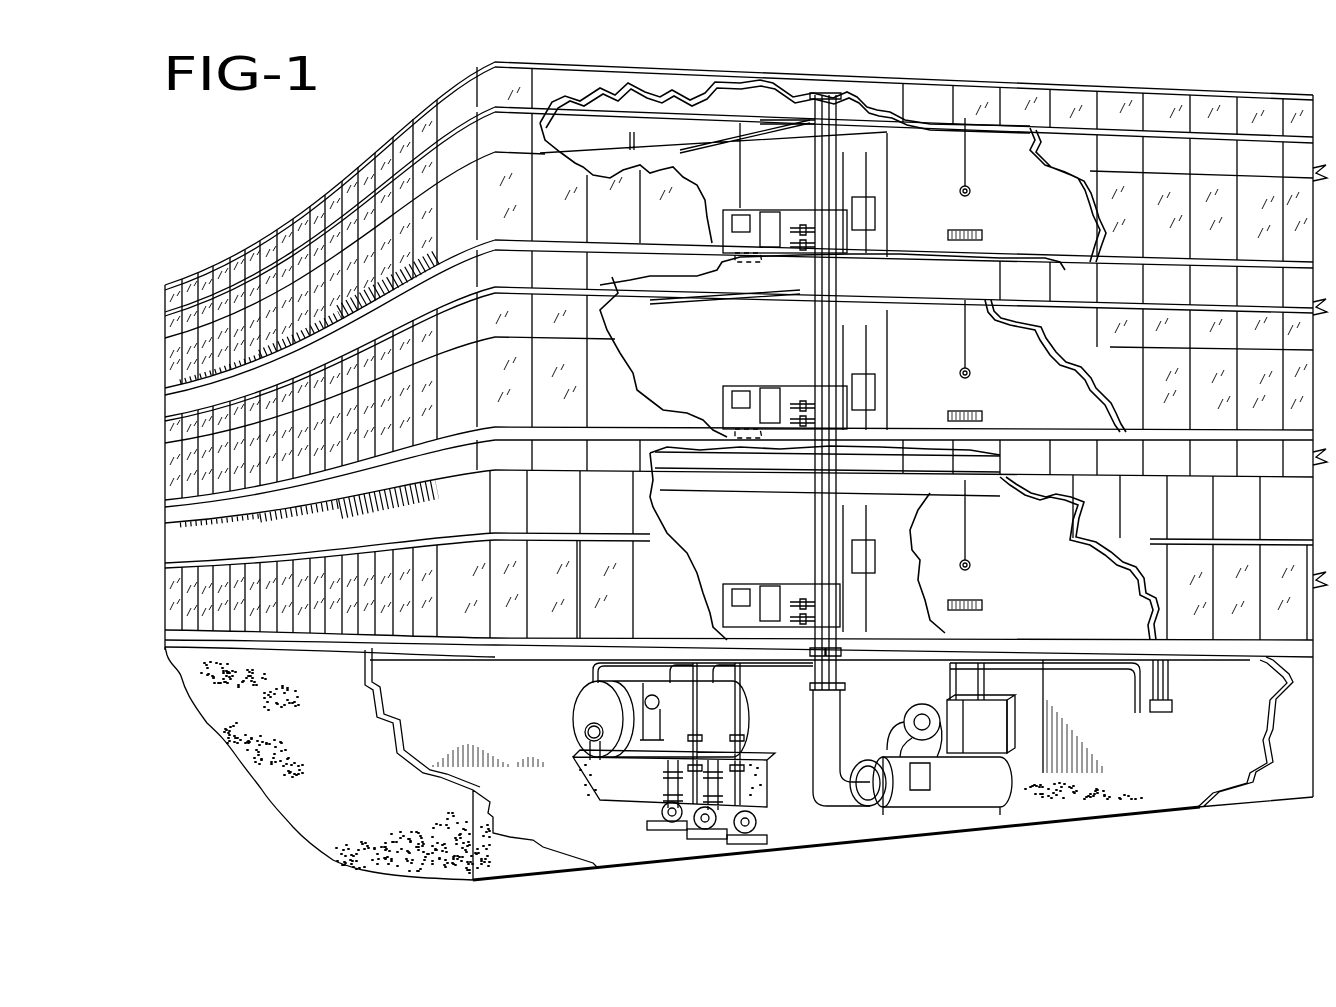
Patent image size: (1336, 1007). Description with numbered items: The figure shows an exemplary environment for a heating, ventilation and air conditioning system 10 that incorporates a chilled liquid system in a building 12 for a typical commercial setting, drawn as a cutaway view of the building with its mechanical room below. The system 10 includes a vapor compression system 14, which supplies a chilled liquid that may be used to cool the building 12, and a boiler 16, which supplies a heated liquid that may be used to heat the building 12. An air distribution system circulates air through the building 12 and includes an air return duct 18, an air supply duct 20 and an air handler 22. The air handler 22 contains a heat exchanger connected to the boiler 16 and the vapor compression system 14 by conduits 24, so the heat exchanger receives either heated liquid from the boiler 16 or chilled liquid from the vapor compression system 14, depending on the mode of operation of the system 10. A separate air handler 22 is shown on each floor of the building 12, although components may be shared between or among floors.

The heating, ventilation and air conditioning system 10 is at (1058, 836).
The building 12 is at (1172, 93).
The vapor compression system 14 is at (958, 790).
The boiler 16 is at (580, 714).
The air return duct 18 is at (740, 440).
The air supply duct 20 is at (808, 118).
The air handler 22 is at (771, 387).
The conduits 24 is at (826, 634).